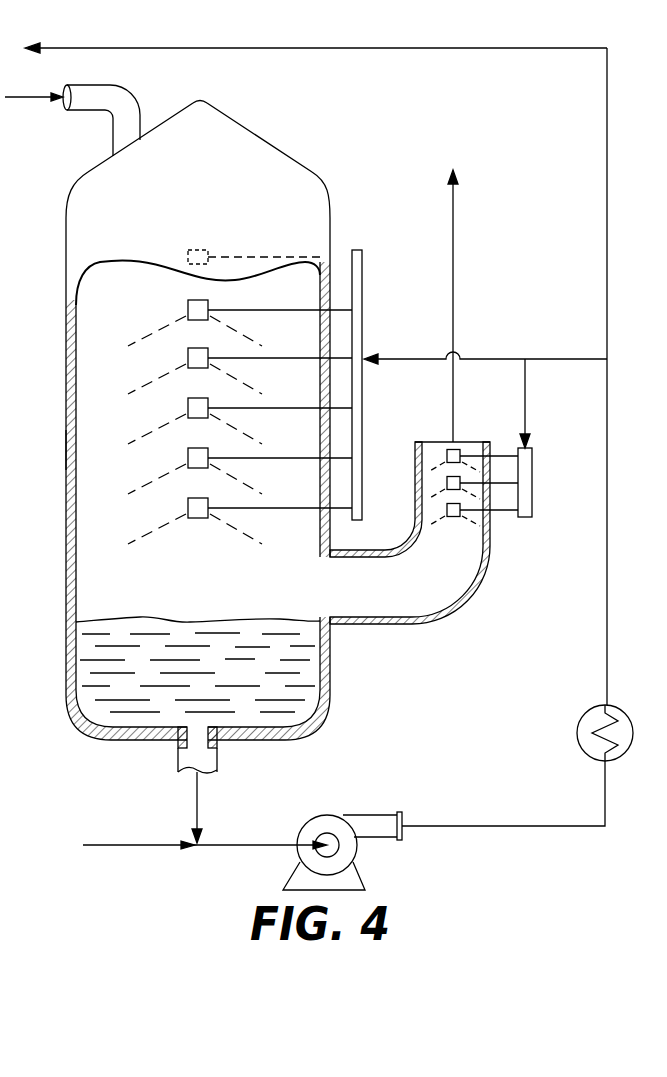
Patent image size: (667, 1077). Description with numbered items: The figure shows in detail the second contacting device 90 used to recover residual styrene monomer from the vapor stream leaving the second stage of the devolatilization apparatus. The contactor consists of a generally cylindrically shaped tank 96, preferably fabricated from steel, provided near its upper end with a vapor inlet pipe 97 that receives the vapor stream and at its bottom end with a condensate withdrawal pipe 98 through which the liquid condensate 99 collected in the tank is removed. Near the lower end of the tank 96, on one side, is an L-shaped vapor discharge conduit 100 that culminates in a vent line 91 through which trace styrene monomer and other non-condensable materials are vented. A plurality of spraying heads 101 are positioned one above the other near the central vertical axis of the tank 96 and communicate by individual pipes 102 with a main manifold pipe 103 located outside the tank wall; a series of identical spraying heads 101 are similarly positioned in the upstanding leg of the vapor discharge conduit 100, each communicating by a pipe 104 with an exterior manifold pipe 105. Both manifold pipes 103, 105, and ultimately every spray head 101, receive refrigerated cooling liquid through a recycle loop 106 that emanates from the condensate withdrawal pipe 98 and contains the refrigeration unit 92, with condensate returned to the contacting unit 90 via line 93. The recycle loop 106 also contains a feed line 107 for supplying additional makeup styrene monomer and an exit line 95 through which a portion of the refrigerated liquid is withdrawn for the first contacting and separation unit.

The second contacting device 90 is at (58, 399).
The vent line 91 is at (456, 267).
The refrigerating unit 92 is at (630, 727).
The line 93 is at (483, 359).
The exit line 95 is at (272, 48).
The tank 96 is at (68, 452).
The vapor inlet pipe 97 is at (90, 100).
The condensate withdrawal pipe 98 is at (178, 757).
The liquid condensate 99 is at (252, 684).
The L-shaped vapor discharge conduit 100 is at (420, 593).
The spraying heads 101 is at (187, 302).
The individual pipes 102 is at (265, 312).
The main manifold pipe 103 is at (364, 326).
The pipe 104 is at (505, 486).
The exterior manifold pipe 105 is at (533, 470).
The recycle loop 106 is at (603, 680).
The feed line 107 is at (158, 852).